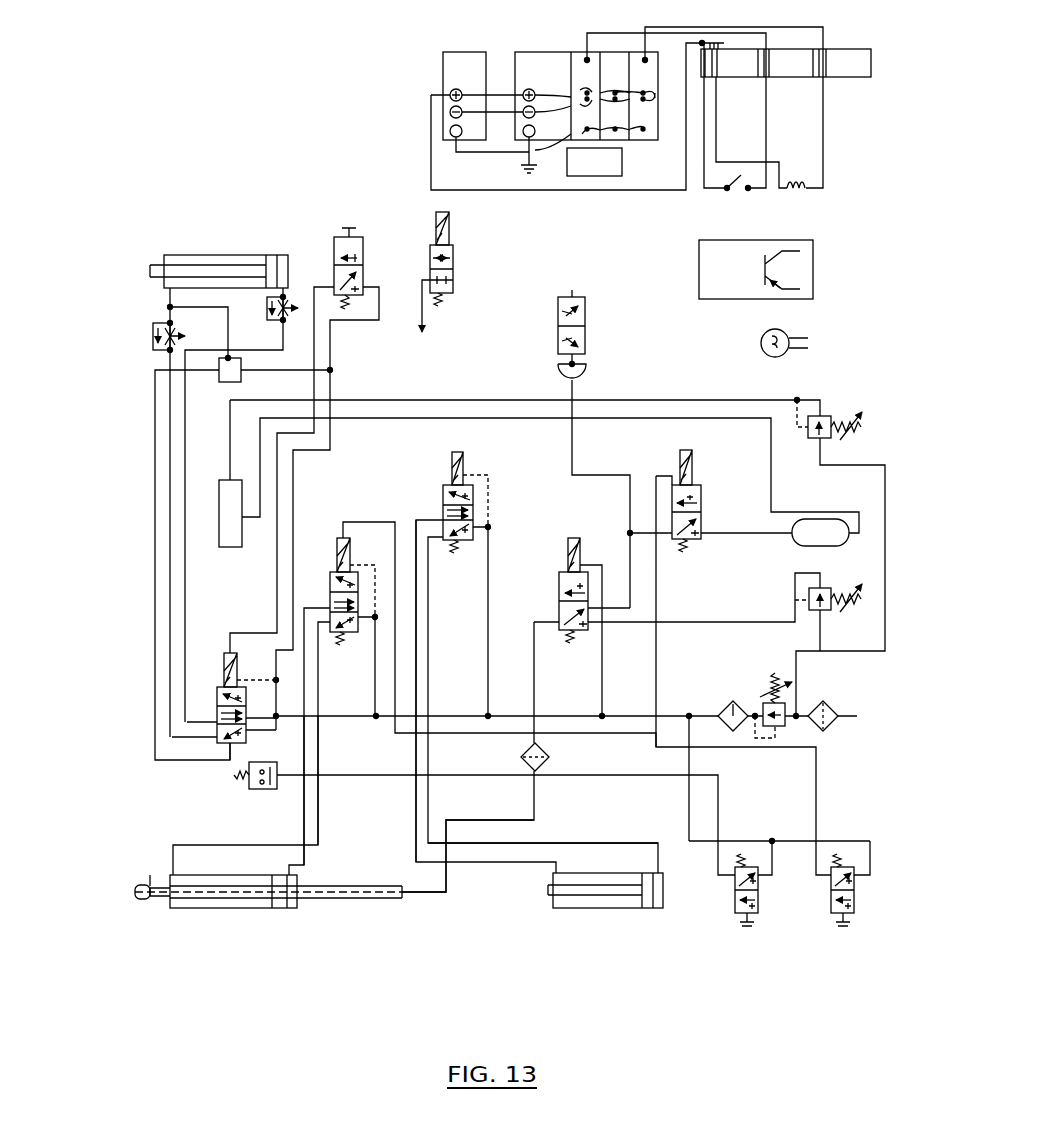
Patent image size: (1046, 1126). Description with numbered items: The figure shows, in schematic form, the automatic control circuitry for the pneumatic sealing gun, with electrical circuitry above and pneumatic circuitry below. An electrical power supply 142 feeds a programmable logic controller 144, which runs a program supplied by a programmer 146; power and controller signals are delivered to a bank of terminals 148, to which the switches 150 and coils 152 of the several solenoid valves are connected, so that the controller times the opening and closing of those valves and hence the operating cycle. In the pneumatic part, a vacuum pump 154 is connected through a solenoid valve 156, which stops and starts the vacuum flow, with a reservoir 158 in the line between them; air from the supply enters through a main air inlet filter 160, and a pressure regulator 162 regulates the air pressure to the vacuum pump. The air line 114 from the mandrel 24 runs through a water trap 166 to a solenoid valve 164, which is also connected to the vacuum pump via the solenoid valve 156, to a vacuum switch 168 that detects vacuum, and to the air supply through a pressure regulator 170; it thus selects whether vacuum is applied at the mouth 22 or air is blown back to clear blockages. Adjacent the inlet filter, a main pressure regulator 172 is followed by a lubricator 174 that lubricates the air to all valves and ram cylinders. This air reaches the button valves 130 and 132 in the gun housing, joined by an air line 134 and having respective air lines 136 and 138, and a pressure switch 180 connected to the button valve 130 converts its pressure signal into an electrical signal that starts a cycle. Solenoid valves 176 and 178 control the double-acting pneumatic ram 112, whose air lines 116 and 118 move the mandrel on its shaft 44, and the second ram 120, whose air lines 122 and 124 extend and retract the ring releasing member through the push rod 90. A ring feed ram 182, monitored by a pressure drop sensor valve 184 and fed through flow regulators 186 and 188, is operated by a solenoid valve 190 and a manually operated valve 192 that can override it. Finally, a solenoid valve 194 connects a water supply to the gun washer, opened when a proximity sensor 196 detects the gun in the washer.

The mouth 22 is at (151, 878).
The mandrel 24 is at (142, 900).
The shaft 44 is at (165, 900).
The push rod 90 is at (548, 892).
The double-acting pneumatic ram 112 is at (250, 910).
The air line 114 is at (410, 895).
The air line 116 is at (318, 820).
The air line 118 is at (304, 820).
The second double-acting pneumatic ram 120 is at (620, 910).
The air line 122 is at (495, 862).
The air line 124 is at (565, 843).
The button valve 130 is at (760, 905).
The second button valve 132 is at (855, 905).
The air line 134 is at (790, 840).
The air line 136 is at (718, 782).
The air line 138 is at (817, 782).
The electrical power supply 142 is at (443, 70).
The programmable logic controller 144 is at (543, 52).
The programmer 146 is at (622, 161).
The bank of terminals 148 is at (845, 78).
The switches 150 is at (735, 190).
The coils 152 is at (800, 196).
The vacuum pump 154 is at (242, 530).
The solenoid valve 156 is at (701, 488).
The reservoir 158 is at (808, 546).
The main air inlet filter 160 is at (838, 710).
The pressure regulator 162 is at (825, 415).
The solenoid valve 164 is at (559, 585).
The water trap 166 is at (520, 755).
The vacuum switch 168 is at (585, 325).
The pressure regulator 170 is at (812, 612).
The main pressure regulator 172 is at (763, 705).
The lubricator 174 is at (720, 708).
The solenoid valve 176 is at (330, 580).
The solenoid valve 178 is at (443, 500).
The pressure switch 180 is at (249, 785).
The ram 182 is at (262, 255).
The pressure drop sensor valve 184 is at (232, 383).
The flow regulator 186 is at (160, 322).
The flow regulator 188 is at (281, 322).
The solenoid valve 190 is at (217, 700).
The manually operated valve 192 is at (363, 262).
The solenoid valve 194 is at (453, 253).
The proximity sensor 196 is at (699, 258).